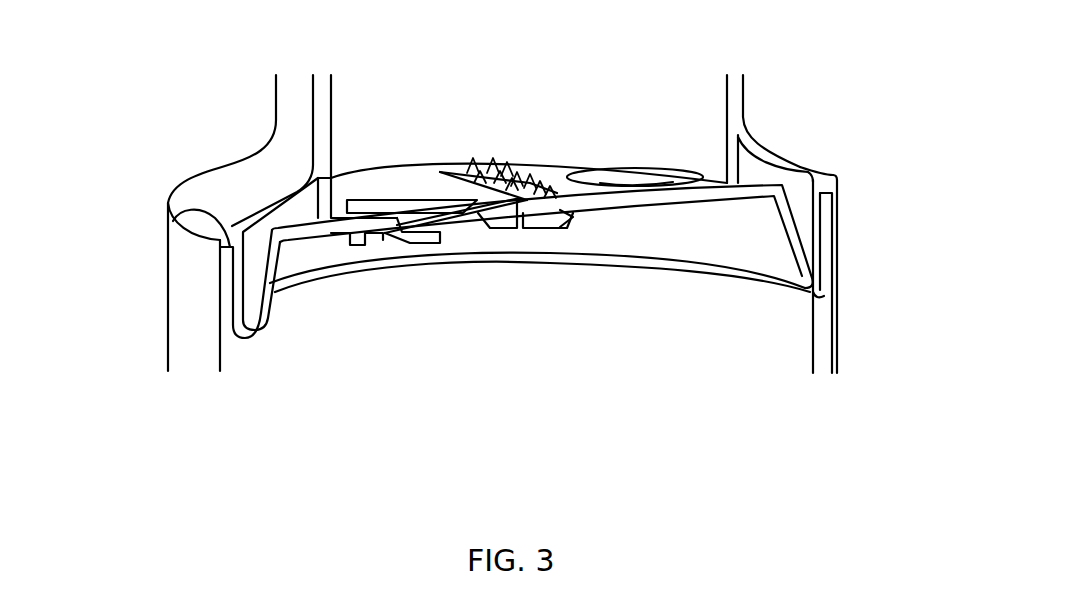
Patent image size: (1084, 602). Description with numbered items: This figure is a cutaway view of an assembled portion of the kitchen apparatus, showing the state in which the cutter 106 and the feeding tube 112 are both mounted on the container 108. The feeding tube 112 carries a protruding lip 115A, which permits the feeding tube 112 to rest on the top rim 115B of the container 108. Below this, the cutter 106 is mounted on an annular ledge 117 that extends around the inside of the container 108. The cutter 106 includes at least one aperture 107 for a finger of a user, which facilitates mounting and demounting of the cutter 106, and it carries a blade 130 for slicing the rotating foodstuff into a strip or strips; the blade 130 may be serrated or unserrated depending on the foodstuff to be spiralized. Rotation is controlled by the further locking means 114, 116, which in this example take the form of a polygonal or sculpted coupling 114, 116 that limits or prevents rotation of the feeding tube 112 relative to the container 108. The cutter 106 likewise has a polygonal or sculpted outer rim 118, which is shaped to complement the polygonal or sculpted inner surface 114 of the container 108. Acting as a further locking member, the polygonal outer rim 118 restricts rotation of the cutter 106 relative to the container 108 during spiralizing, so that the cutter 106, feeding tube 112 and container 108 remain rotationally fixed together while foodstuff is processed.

The cutter 106 is at (408, 185).
The aperture 107 is at (637, 185).
The container 108 is at (193, 350).
The feeding tube 112 is at (248, 178).
The polygonal or sculpted inner surface of the container 114 is at (828, 248).
The protruding lip 115A is at (173, 221).
The top rim 115B is at (229, 248).
The locking means 116 is at (813, 230).
The annular ledge 117 is at (238, 337).
The polygonal outer rim 118 is at (712, 263).
The blade 130 is at (484, 166).